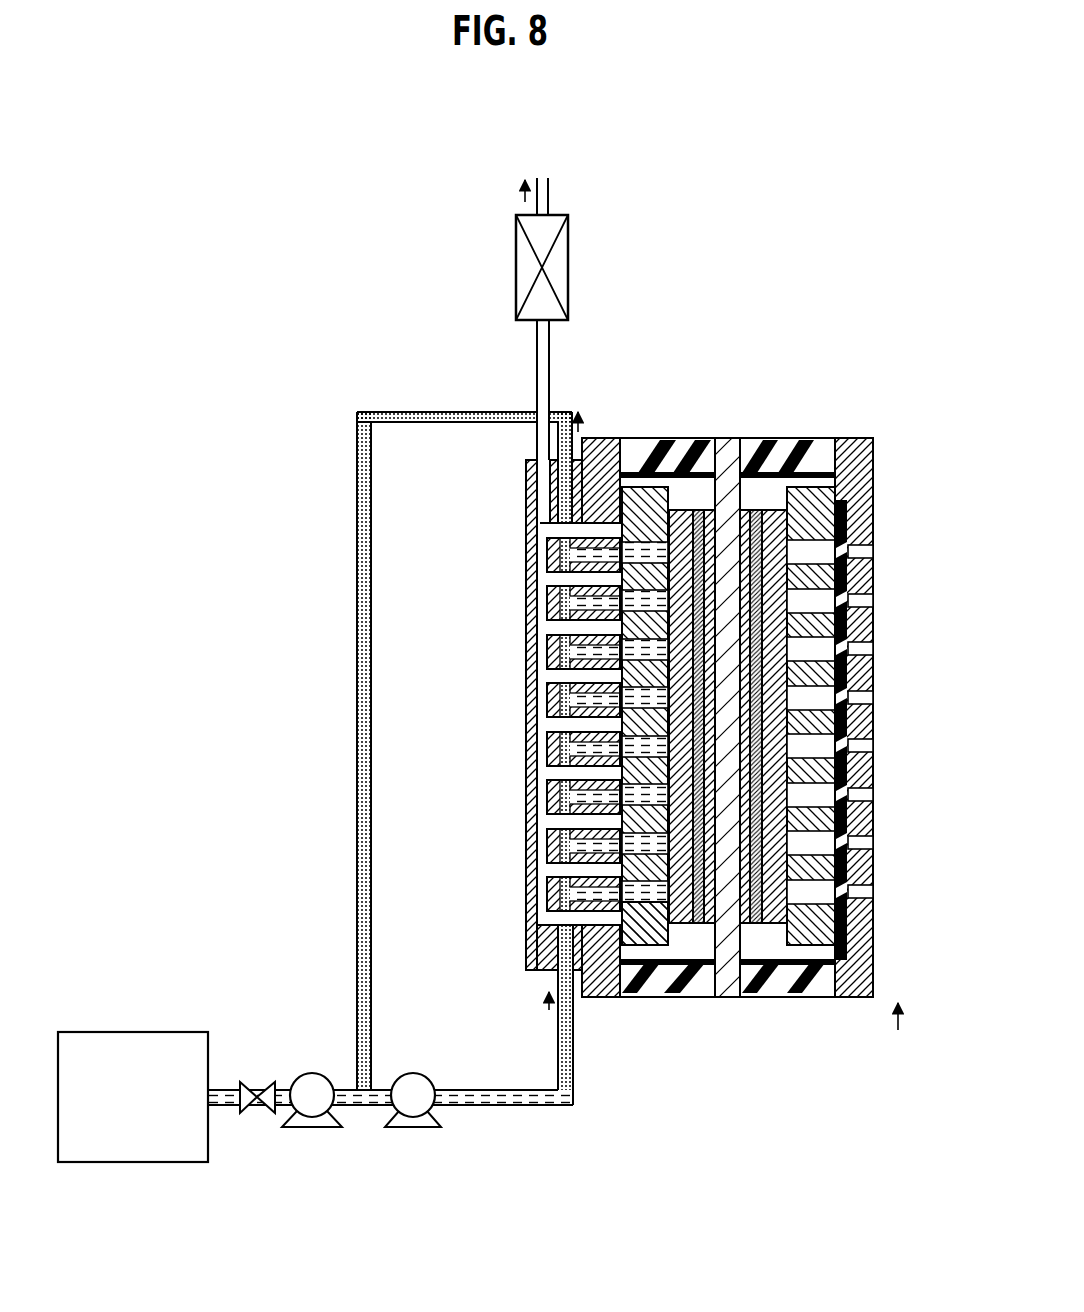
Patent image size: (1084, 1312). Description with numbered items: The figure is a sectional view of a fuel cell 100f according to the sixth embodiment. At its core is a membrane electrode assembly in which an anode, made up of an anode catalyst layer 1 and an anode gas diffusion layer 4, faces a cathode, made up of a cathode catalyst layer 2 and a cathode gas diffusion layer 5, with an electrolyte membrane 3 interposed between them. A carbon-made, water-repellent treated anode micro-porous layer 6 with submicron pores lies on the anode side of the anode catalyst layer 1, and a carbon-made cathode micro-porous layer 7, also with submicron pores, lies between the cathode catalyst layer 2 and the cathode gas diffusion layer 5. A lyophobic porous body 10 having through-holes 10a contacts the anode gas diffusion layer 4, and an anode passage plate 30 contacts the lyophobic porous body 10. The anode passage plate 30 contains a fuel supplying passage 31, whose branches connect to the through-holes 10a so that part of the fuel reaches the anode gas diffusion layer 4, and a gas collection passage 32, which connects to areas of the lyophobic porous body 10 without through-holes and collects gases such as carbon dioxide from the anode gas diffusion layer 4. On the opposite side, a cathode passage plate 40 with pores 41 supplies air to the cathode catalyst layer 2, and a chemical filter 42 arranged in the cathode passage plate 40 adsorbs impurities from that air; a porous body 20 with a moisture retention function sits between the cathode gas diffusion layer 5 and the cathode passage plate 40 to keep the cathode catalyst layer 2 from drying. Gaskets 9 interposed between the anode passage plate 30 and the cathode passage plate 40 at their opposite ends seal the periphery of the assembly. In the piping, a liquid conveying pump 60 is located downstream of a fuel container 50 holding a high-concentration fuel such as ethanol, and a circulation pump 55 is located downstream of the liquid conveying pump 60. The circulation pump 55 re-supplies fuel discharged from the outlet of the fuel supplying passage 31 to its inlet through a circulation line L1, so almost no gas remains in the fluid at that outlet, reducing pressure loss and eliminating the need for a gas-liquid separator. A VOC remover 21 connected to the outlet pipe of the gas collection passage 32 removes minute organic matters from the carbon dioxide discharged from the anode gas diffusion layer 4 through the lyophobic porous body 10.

The anode catalyst layer 1 is at (709, 998).
The cathode catalyst layer 2 is at (745, 998).
The electrolyte membrane 3 is at (727, 998).
The anode gas diffusion layer 4 is at (698, 998).
The cathode gas diffusion layer 5 is at (757, 998).
The anode micro-porous layer 6 is at (690, 507).
The cathode micro-porous layer 7 is at (755, 507).
The gaskets 9 is at (783, 438).
The lyophobic porous body 10 is at (645, 487).
The through-holes 10a is at (655, 996).
The porous body 20 is at (815, 489).
The VOC remover 21 is at (568, 265).
The anode passage plate 30 is at (600, 438).
The fuel supplying passage 31 is at (540, 950).
The gas collection passage 32 is at (530, 730).
The cathode passage plate 40 is at (857, 438).
The pores 41 is at (874, 888).
The chemical filter 42 is at (872, 535).
The fuel container 50 is at (146, 1032).
The circulation pump 55 is at (418, 1128).
The liquid conveying pump 60 is at (320, 1128).
The fuel cell 100f is at (763, 186).
The circulation line L1 is at (357, 752).